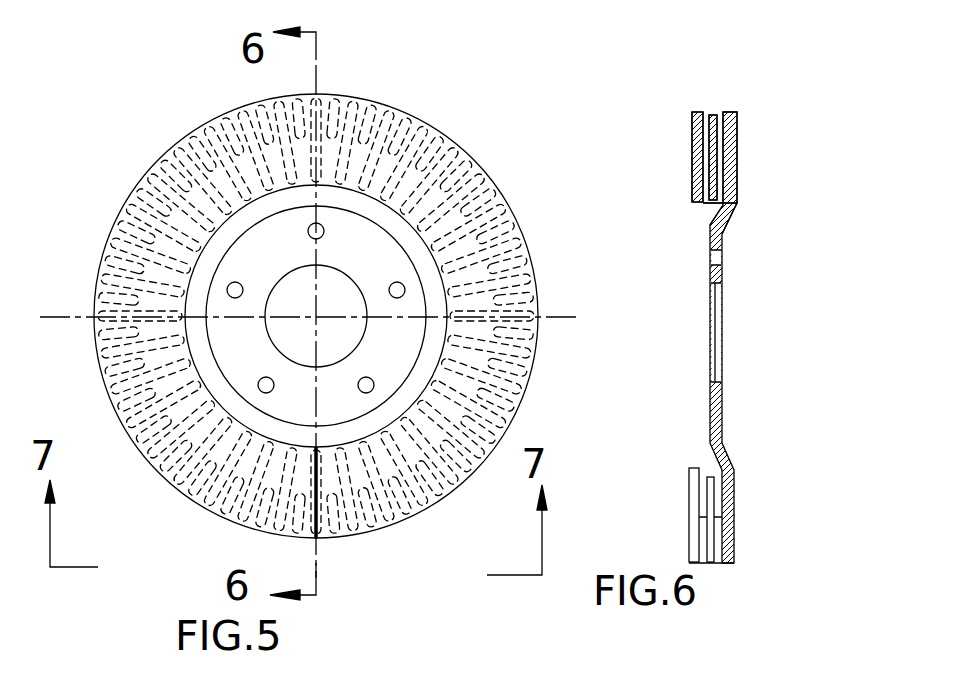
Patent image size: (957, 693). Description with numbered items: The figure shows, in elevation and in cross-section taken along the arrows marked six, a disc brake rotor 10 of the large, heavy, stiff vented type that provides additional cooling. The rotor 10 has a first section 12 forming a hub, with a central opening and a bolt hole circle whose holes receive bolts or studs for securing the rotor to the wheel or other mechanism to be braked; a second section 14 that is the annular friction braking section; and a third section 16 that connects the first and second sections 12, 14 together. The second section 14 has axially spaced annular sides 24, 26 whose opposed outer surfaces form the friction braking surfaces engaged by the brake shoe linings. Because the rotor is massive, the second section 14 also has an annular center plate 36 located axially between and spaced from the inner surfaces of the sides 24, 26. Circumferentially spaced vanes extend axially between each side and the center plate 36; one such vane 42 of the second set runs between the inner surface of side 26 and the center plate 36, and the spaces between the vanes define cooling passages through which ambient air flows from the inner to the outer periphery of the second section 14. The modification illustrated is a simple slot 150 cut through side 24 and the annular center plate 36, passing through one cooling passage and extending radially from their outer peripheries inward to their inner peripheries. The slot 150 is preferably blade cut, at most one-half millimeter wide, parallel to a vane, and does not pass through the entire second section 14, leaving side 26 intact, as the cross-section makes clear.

In FIG. 5, the disc brake rotor 10 is at (124, 428).
In FIG. 5, the slot 150 is at (322, 539).
In FIG. 6, the first section 12 is at (735, 268).
In FIG. 6, the second section 14 is at (752, 158).
In FIG. 6, the third section 16 is at (745, 214).
In FIG. 6, the annular side 24 is at (692, 183).
In FIG. 6, the annular side 26 is at (729, 112).
In FIG. 6, the annular center plate 36 is at (709, 200).
In FIG. 6, the vane 42 is at (722, 140).